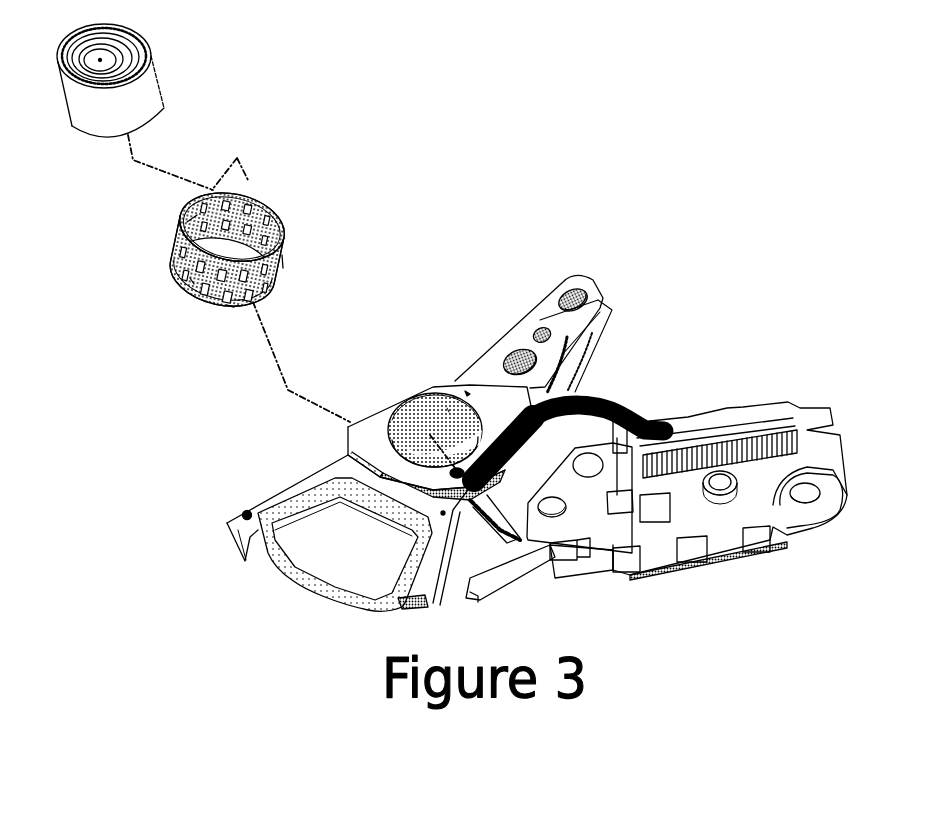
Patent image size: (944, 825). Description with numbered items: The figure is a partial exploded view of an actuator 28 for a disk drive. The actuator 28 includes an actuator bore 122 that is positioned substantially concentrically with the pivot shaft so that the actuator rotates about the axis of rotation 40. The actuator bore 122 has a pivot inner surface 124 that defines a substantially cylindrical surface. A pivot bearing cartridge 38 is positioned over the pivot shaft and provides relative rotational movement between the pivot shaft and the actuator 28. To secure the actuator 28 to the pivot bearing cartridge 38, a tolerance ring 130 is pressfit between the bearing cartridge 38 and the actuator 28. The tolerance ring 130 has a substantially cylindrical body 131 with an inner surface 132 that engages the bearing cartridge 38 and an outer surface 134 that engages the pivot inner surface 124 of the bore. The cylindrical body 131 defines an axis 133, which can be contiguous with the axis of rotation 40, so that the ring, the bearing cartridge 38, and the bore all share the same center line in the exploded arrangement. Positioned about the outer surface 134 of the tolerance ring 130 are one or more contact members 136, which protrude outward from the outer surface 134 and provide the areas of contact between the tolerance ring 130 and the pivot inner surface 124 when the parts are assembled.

The actuator 28 is at (511, 416).
The pivot bearing cartridge 38 is at (153, 83).
The axis of rotation 40 is at (420, 440).
The actuator bore 122 is at (415, 405).
The pivot inner surface 124 is at (447, 408).
The tolerance ring 130 is at (241, 267).
The cylindrical body 131 is at (291, 263).
The inner surface 132 is at (188, 210).
The axis 133 is at (277, 342).
The outer surface 134 is at (195, 282).
The contact member 136 is at (229, 307).